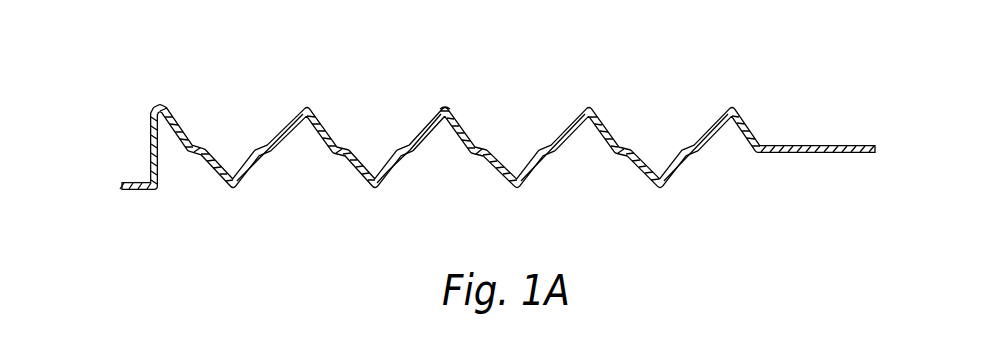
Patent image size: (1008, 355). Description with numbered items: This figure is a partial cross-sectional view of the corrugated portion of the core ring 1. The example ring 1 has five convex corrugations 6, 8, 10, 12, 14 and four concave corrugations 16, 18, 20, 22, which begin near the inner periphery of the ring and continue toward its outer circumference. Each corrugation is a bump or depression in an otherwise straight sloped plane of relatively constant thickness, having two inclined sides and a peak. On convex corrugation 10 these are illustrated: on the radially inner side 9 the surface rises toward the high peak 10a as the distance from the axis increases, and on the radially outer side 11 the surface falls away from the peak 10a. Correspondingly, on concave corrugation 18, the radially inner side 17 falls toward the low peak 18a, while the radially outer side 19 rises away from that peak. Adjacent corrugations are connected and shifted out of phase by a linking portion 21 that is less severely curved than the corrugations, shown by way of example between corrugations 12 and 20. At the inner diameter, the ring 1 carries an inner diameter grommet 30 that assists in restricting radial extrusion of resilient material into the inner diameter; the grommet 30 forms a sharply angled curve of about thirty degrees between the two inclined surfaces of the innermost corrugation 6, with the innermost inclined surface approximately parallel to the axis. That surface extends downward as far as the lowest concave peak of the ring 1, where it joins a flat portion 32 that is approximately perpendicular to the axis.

The core ring 1 is at (807, 75).
The convex corrugation 6 is at (166, 98).
The convex corrugation 8 is at (312, 98).
The radially inner inclined side 9 is at (432, 123).
The convex corrugation 10 is at (450, 90).
The peak 10a is at (448, 100).
The radially outer inclined side 11 is at (468, 124).
The convex corrugation 12 is at (590, 90).
The convex corrugation 14 is at (732, 100).
The concave corrugation 16 is at (230, 195).
The radially inner side of concave corrugation 17 is at (348, 168).
The concave corrugation 18 is at (382, 200).
The low peak 18a is at (374, 191).
The radially outer side of concave corrugation 19 is at (398, 170).
The concave corrugation 20 is at (527, 200).
The linking portion 21 is at (556, 165).
The concave corrugation 22 is at (668, 200).
The inner diameter grommet 30 is at (148, 143).
The flat portion 32 is at (138, 181).